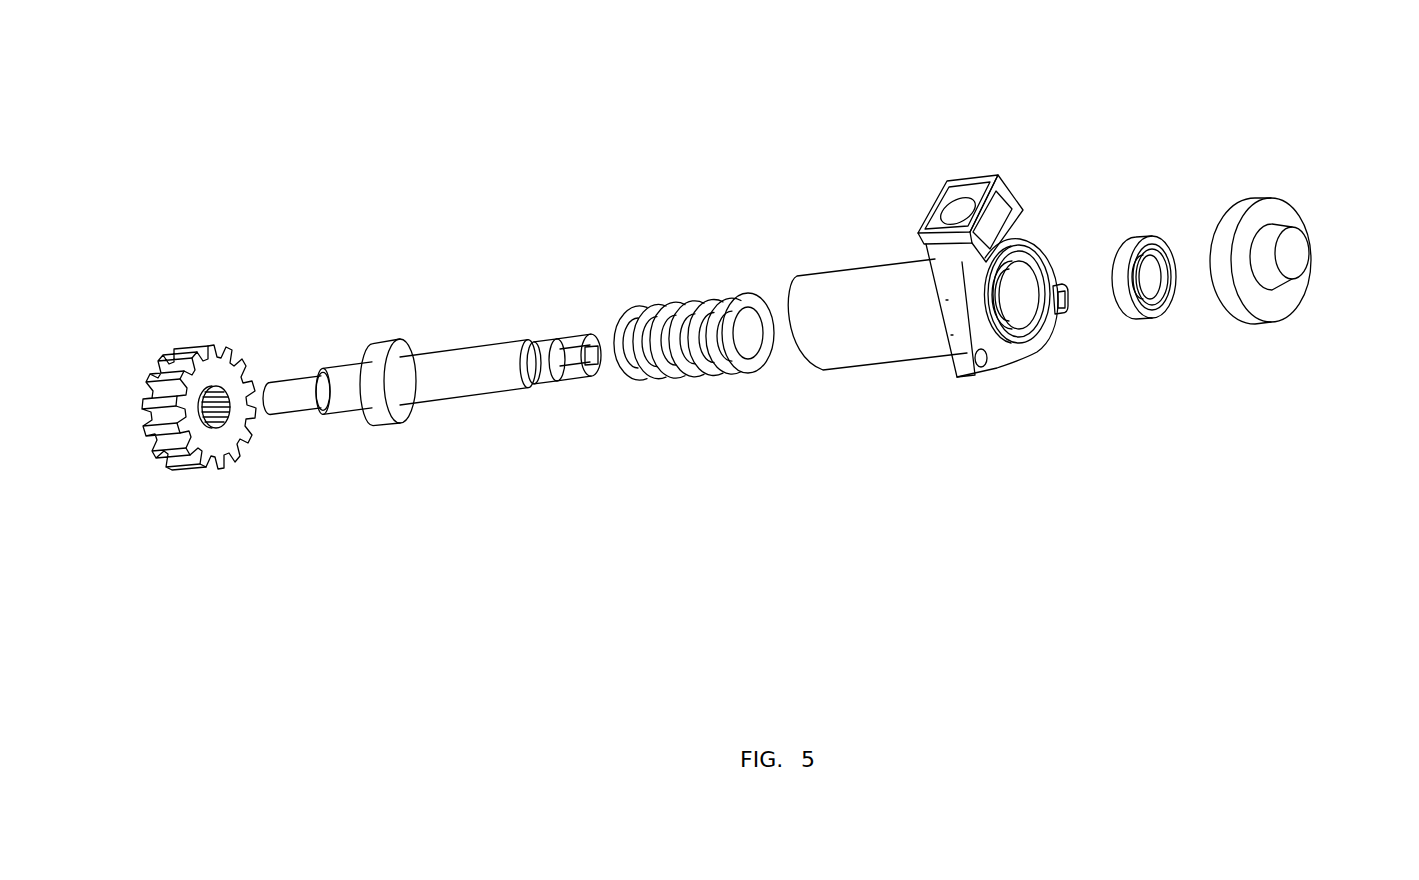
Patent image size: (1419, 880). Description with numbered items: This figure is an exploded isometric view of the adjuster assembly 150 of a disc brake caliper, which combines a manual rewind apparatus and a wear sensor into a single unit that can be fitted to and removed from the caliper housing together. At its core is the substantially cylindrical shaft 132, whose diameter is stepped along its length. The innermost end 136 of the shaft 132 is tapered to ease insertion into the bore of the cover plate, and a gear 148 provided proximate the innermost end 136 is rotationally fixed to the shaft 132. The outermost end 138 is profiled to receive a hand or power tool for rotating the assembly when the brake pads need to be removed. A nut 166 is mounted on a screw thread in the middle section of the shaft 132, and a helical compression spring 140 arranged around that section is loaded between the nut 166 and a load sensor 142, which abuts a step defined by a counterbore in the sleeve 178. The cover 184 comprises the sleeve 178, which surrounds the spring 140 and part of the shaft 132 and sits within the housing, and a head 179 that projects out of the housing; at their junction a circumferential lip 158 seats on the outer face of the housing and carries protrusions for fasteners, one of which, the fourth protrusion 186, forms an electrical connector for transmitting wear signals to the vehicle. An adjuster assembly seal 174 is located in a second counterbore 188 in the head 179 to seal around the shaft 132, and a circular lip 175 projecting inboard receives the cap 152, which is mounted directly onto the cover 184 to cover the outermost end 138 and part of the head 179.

The shaft 132 is at (497, 393).
The innermost end 136 is at (273, 393).
The outermost end 138 is at (592, 352).
The helical compression spring 140 is at (688, 375).
The load sensor 142 is at (748, 297).
The gear 148 is at (227, 468).
The adjuster assembly 150 is at (576, 137).
The cap 152 is at (1272, 200).
The circumferential lip 158 is at (1020, 357).
The nut 166 is at (375, 347).
The adjuster assembly seal 174 is at (1150, 240).
The circular lip 175 is at (1165, 285).
The sleeve 178 is at (880, 360).
The head 179 is at (1053, 323).
The cover 184 is at (1000, 421).
The fourth protrusion 186 is at (962, 193).
The second counterbore 188 is at (998, 296).